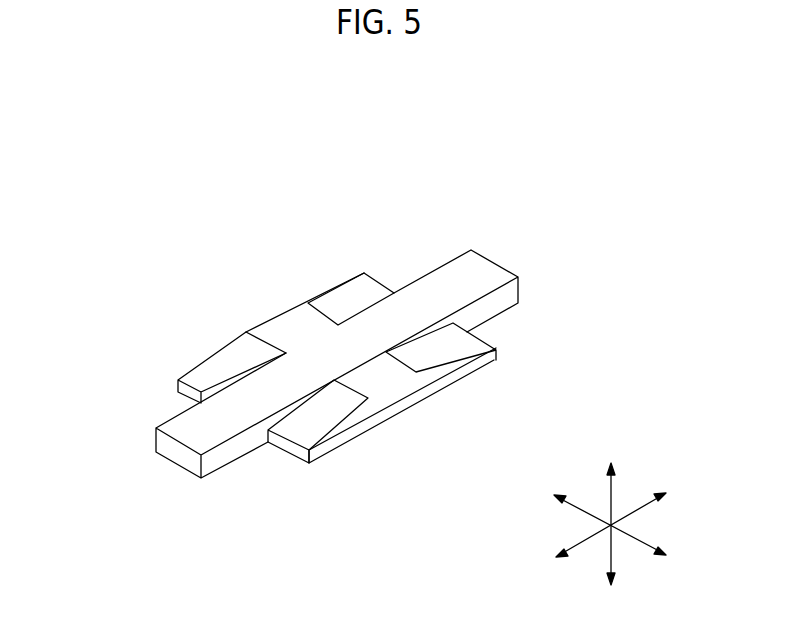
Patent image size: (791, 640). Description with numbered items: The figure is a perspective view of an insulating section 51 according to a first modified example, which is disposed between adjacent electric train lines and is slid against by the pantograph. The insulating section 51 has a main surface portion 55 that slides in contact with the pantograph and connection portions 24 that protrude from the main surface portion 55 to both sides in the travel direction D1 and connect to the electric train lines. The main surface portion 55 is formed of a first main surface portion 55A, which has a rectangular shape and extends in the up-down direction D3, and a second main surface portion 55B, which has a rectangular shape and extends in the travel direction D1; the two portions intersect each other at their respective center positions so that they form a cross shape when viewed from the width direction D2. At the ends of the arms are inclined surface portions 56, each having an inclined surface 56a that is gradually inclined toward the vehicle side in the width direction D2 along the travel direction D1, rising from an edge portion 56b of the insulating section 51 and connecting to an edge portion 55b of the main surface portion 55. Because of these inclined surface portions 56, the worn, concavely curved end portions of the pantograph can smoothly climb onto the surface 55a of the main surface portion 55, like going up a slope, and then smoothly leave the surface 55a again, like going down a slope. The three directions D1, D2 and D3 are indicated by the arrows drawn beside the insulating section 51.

The connection portion 24 is at (193, 430).
The insulating section 51 is at (515, 212).
The main surface portion 55 is at (448, 144).
The first main surface portion 55A is at (275, 320).
The second main surface portion 55B is at (446, 290).
The surface of main surface portion 55a is at (409, 376).
The edge portion of main surface portion 55b is at (248, 340).
The inclined surface portion 56 is at (208, 372).
The inclined surface 56a is at (222, 350).
The edge portion of inclined surface portion 56b is at (183, 396).
The travel direction D1 is at (633, 509).
The width direction D2 is at (614, 498).
The up-down direction D3 is at (630, 540).